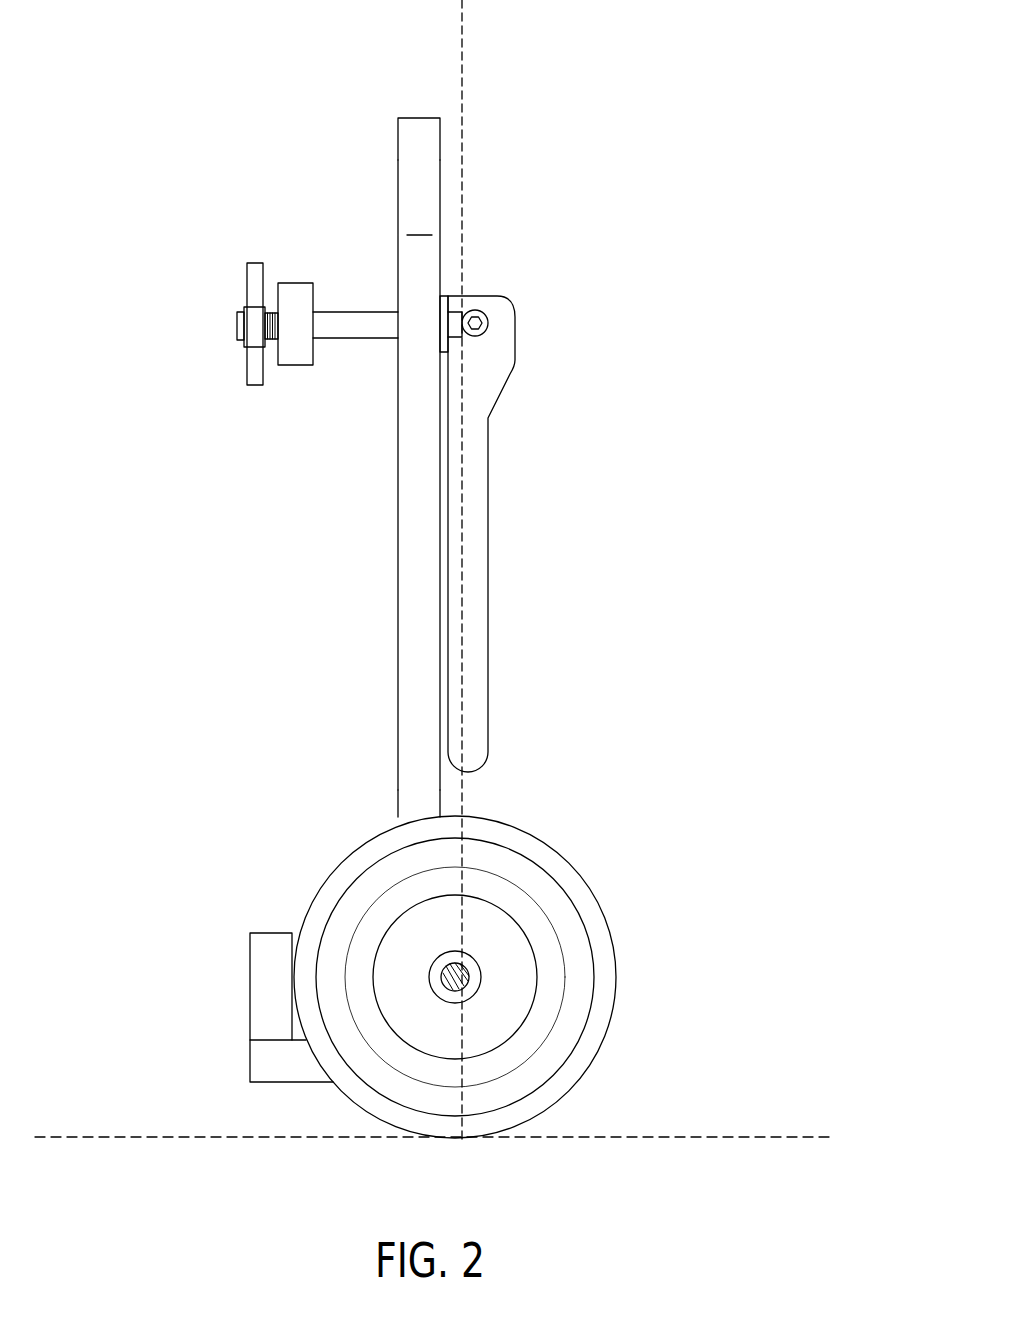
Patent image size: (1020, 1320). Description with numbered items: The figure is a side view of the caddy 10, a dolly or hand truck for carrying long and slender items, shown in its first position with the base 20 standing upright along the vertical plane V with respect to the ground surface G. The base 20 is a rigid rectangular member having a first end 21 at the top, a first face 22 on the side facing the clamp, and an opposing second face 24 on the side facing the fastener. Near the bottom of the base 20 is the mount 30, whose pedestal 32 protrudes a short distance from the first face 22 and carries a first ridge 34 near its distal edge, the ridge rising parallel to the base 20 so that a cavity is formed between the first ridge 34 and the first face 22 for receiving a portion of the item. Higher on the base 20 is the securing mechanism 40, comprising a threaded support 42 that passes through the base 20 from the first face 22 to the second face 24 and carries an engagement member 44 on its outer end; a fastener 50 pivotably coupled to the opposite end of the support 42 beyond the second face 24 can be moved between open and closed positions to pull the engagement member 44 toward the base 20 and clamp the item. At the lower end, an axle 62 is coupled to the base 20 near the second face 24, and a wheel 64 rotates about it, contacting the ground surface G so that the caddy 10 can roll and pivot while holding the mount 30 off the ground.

The caddy 10 is at (696, 102).
The base 20 is at (374, 623).
The first end 21 is at (421, 117).
The first face 22 is at (397, 575).
The second face 24 is at (440, 792).
The mount 30 is at (228, 936).
The pedestal 32 is at (277, 1076).
The first ridge 34 is at (258, 999).
The securing mechanism 40 is at (202, 279).
The support 42 is at (353, 323).
The engagement member 44 is at (300, 295).
The fastener 50 is at (475, 398).
The axle 62 is at (468, 976).
The wheels 64 is at (558, 951).
The vertical plane V is at (463, 44).
The ground surface G is at (750, 1135).